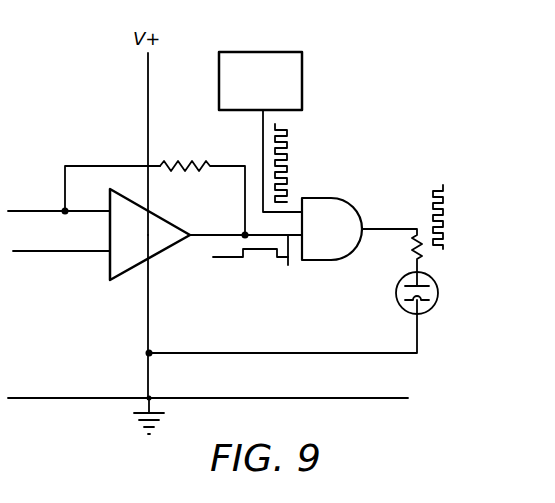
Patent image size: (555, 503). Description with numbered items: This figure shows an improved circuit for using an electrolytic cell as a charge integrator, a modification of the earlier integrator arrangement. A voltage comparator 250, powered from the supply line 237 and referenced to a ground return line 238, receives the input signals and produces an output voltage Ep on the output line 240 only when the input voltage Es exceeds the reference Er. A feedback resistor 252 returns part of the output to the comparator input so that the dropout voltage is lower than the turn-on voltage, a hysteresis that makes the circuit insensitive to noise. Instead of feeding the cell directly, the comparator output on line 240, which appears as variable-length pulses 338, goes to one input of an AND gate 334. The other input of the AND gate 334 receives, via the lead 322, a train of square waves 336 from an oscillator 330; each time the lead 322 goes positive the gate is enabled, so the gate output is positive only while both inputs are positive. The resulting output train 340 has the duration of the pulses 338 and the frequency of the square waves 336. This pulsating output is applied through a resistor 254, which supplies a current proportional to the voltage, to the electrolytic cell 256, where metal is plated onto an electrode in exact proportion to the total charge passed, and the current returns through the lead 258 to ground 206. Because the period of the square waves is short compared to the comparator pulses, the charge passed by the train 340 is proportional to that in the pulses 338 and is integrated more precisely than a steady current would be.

The ground 206 is at (152, 404).
The supply line V+ 237 is at (146, 109).
The ground return line 238 is at (146, 312).
The output line 240 is at (301, 266).
The voltage comparator 250 is at (161, 214).
The feedback resistor 252 is at (177, 162).
The resistor 254 is at (411, 256).
The electrolytic cell 256 is at (440, 297).
The lead 258 is at (292, 356).
The lead 322 is at (262, 151).
The oscillator 330 is at (303, 70).
The AND gate 334 is at (331, 197).
The square wave train 336 is at (289, 164).
The pulses 338 is at (262, 251).
The output pulse train 340 is at (445, 196).